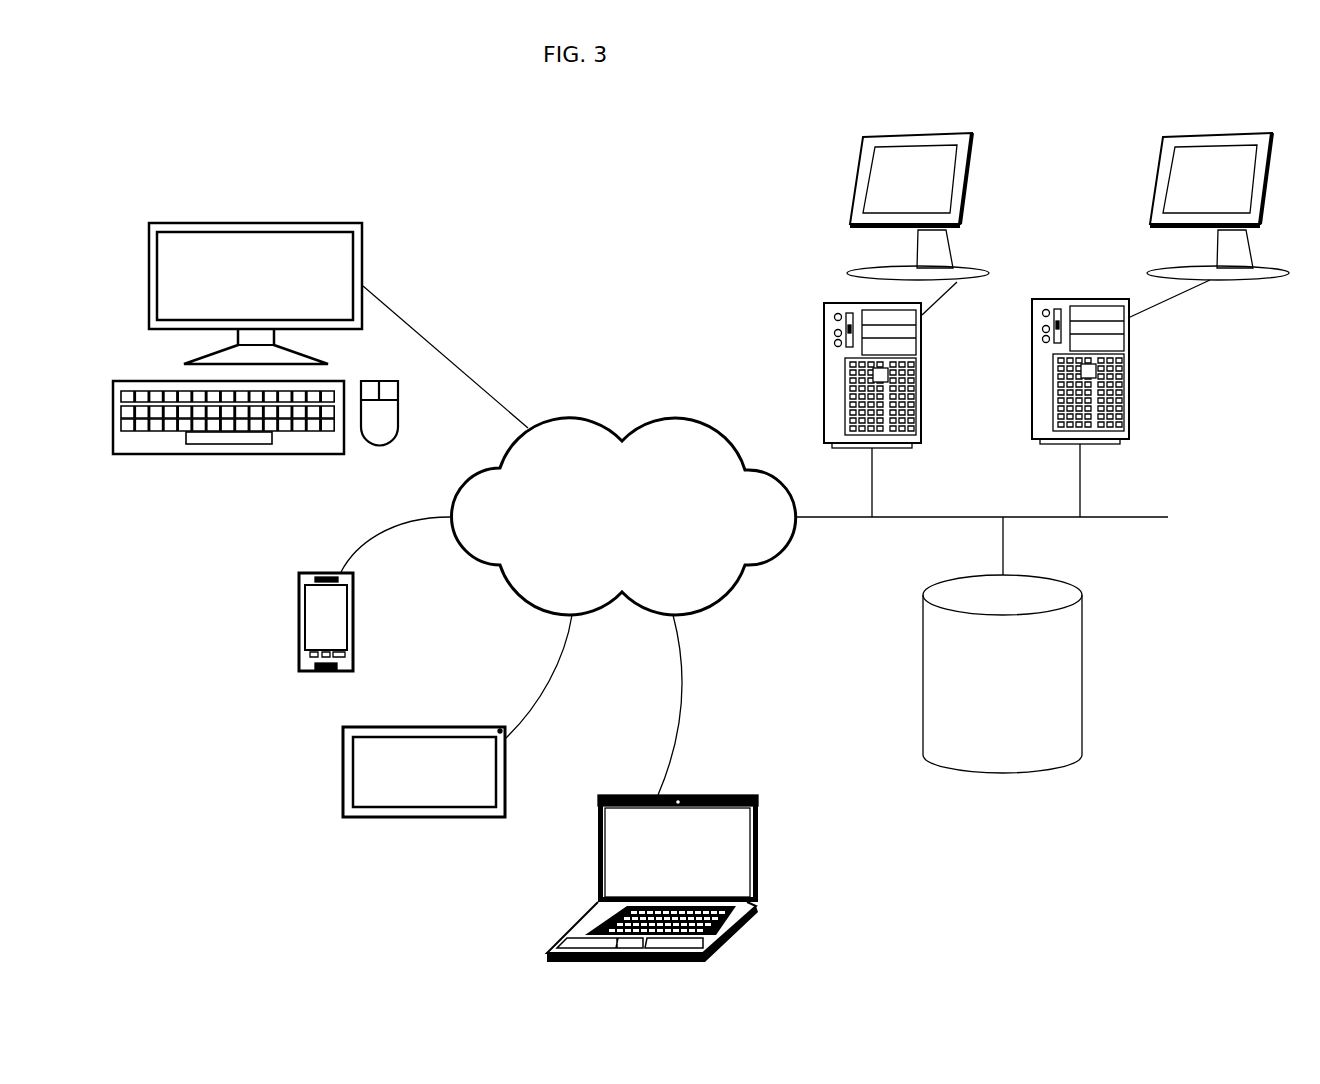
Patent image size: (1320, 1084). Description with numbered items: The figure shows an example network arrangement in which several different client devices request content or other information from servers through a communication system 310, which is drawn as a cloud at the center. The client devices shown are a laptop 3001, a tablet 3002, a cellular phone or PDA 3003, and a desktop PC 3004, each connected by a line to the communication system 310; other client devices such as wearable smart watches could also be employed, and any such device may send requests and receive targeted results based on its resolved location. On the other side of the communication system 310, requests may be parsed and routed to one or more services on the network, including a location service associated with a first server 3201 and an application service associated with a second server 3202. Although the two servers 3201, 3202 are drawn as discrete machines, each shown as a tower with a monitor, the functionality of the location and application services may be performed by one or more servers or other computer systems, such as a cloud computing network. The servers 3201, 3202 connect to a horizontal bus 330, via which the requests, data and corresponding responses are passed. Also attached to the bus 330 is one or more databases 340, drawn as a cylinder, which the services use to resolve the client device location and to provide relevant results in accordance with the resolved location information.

The laptop client device 3001 is at (598, 857).
The tablet client device 3002 is at (342, 767).
The cellular phone or PDA client device 3003 is at (298, 620).
The desktop PC client device 3004 is at (363, 243).
The communication system 310 is at (608, 425).
The location service server 3201 is at (824, 333).
The application service server 3202 is at (1128, 373).
The bus 330 is at (1168, 517).
The databases 340 is at (1082, 683).